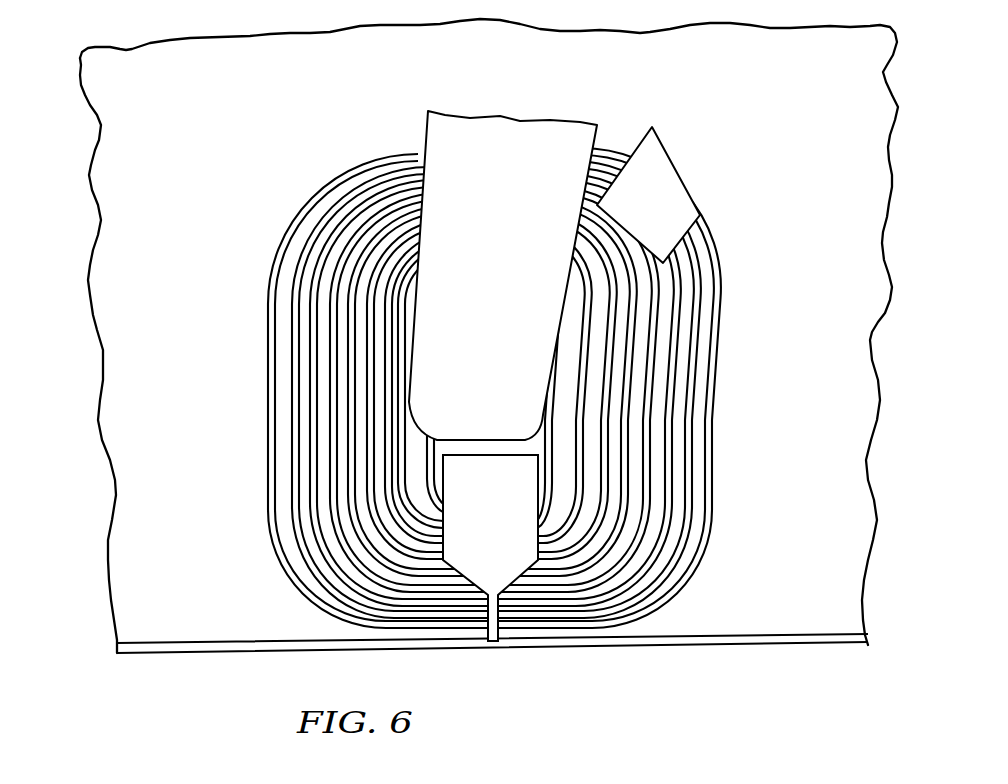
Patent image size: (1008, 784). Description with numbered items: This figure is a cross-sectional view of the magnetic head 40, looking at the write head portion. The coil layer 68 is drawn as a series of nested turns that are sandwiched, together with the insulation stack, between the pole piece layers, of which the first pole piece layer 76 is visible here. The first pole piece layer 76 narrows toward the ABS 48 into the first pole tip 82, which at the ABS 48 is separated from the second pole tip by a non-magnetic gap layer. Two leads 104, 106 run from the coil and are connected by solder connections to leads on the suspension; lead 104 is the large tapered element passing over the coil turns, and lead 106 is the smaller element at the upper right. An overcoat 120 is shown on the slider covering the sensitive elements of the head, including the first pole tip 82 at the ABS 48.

The magnetic head 40 is at (745, 177).
The ABS 48 is at (676, 647).
The coil layer 68 is at (672, 374).
The first pole piece layer 76 is at (503, 524).
The first pole tip 82 is at (493, 642).
The lead 104 is at (516, 232).
The lead 106 is at (657, 153).
The overcoat 120 is at (173, 656).